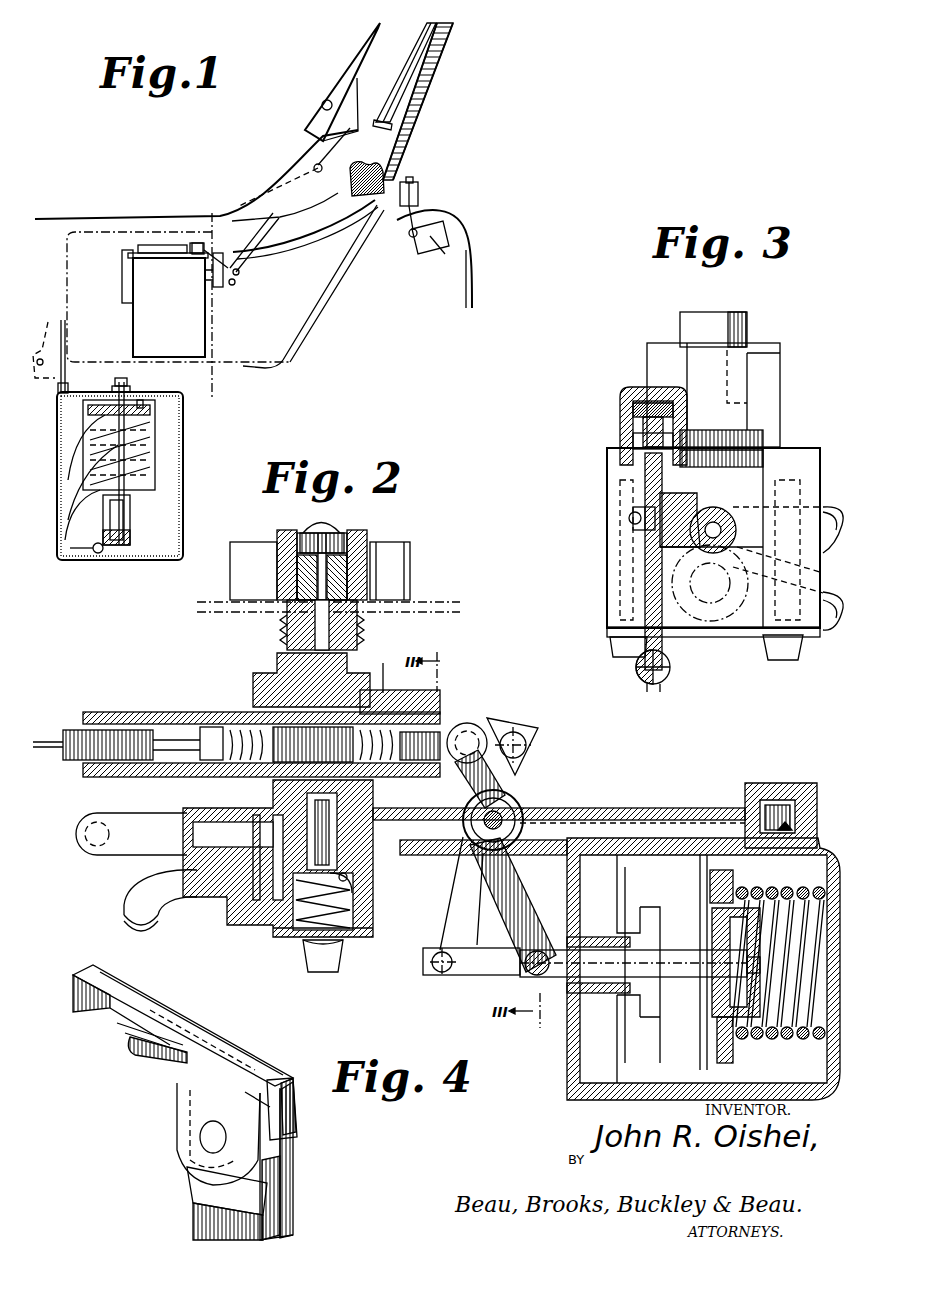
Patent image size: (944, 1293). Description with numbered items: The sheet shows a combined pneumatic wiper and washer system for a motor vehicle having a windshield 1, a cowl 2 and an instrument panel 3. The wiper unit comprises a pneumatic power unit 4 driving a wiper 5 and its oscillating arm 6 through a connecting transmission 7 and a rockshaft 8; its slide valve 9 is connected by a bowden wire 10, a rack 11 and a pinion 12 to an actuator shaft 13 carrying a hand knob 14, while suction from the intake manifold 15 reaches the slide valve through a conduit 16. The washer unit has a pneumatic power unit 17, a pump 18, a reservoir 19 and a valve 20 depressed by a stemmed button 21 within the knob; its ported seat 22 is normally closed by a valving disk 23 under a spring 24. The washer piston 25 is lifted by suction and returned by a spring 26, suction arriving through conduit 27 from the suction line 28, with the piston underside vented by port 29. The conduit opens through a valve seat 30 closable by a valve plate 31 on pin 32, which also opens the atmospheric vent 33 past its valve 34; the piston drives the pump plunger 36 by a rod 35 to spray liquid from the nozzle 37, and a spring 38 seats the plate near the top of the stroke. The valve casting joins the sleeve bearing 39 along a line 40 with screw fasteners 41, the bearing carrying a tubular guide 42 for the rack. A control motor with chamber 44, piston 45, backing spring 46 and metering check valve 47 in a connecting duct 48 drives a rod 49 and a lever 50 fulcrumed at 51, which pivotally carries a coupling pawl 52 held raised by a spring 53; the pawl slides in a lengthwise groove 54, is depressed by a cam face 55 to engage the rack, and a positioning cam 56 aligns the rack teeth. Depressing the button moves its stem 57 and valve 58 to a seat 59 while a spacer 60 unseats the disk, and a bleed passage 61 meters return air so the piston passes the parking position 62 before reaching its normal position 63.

In FIG. 1, the windshield 1 is at (395, 146).
In FIG. 1, the cowl 2 is at (332, 212).
In FIG. 1, the instrument panel 3 is at (440, 207).
In FIG. 1, the power unit 4 is at (172, 307).
In FIG. 1, the wiper 5 is at (395, 82).
In FIG. 1, the oscillating arm 6 is at (340, 75).
In FIG. 1, the connecting transmission 7 is at (240, 273).
In FIG. 1, the rockshaft 8 is at (341, 106).
In FIG. 1, the slide valve 9 is at (195, 243).
In FIG. 1, the bowden wire 10 is at (307, 247).
In FIG. 2, the bowden wire 10 is at (63, 740).
In FIG. 2, the rack 11 is at (273, 730).
In FIG. 3, the pinion 12 is at (757, 437).
In FIG. 2, the pinion 12 is at (253, 712).
In FIG. 3, the actuator shaft 13 is at (680, 318).
In FIG. 2, the actuator shaft 13 is at (367, 630).
In FIG. 1, the hand knob 14 is at (420, 185).
In FIG. 2, the hand knob 14 is at (387, 547).
In FIG. 1, the intake manifold 15 is at (42, 350).
In FIG. 1, the conduit 16 is at (122, 343).
In FIG. 1, the power unit 17 is at (157, 438).
In FIG. 1, the pump 18 is at (143, 533).
In FIG. 1, the reservoir 19 is at (183, 518).
In FIG. 2, the valve 20 is at (373, 890).
In FIG. 2, the stemmed button 21 is at (313, 523).
In FIG. 2, the ported seat 22 is at (340, 867).
In FIG. 2, the valving disk 23 is at (360, 913).
In FIG. 2, the spring 24 is at (297, 895).
In FIG. 1, the piston 25 is at (147, 480).
In FIG. 1, the spring 26 is at (150, 433).
In FIG. 1, the conduit 27 is at (253, 373).
In FIG. 3, the conduit 27 is at (827, 510).
In FIG. 2, the conduit 27 is at (130, 817).
In FIG. 1, the suction line 28 is at (243, 362).
In FIG. 3, the suction line 28 is at (825, 592).
In FIG. 2, the suction line 28 is at (157, 882).
In FIG. 1, the port 29 is at (113, 507).
In FIG. 1, the valve seat 30 is at (120, 377).
In FIG. 1, the valve plate 31 is at (120, 437).
In FIG. 1, the pin 32 is at (140, 400).
In FIG. 1, the atmospheric vent 33 is at (107, 413).
In FIG. 1, the valve 34 is at (110, 400).
In FIG. 1, the rod 35 is at (133, 520).
In FIG. 1, the pump plunger 36 is at (93, 527).
In FIG. 1, the nozzle 37 is at (313, 168).
In FIG. 1, the spring 38 is at (143, 447).
In FIG. 3, the sleeve bearing 39 is at (750, 377).
In FIG. 2, the sleeve bearing 39 is at (280, 657).
In FIG. 2, the line 40 is at (217, 780).
In FIG. 3, the screw fasteners 41 is at (785, 657).
In FIG. 2, the screw fasteners 41 is at (322, 960).
In FIG. 1, the tubular guide 42 is at (393, 181).
In FIG. 3, the tubular guide 42 is at (637, 433).
In FIG. 2, the tubular guide 42 is at (173, 713).
In FIG. 1, the chamber 44 is at (433, 254).
In FIG. 2, the chamber 44 is at (803, 1073).
In FIG. 2, the piston 45 is at (712, 1047).
In FIG. 2, the backing spring 46 is at (773, 893).
In FIG. 2, the metering check valve 47 is at (813, 840).
In FIG. 3, the connecting duct 48 is at (713, 522).
In FIG. 2, the connecting duct 48 is at (603, 827).
In FIG. 1, the rod 49 is at (413, 237).
In FIG. 3, the rod 49 is at (672, 673).
In FIG. 2, the rod 49 is at (687, 977).
In FIG. 1, the lever 50 is at (410, 227).
In FIG. 3, the lever 50 is at (647, 580).
In FIG. 2, the lever 50 is at (503, 923).
In FIG. 4, the lever 50 is at (190, 1213).
In FIG. 3, the fulcrum 51 is at (633, 518).
In FIG. 2, the fulcrum 51 is at (500, 818).
In FIG. 3, the coupling pawl 52 is at (640, 437).
In FIG. 2, the coupling pawl 52 is at (503, 705).
In FIG. 4, the coupling pawl 52 is at (123, 980).
In FIG. 2, the spring 53 is at (453, 777).
In FIG. 4, the spring 53 is at (127, 1025).
In FIG. 2, the lengthwise groove 54 is at (400, 690).
In FIG. 3, the cam face 55 is at (663, 407).
In FIG. 2, the cam face 55 is at (458, 723).
In FIG. 2, the positioning cam 56 is at (385, 765).
In FIG. 2, the stem 57 is at (287, 632).
In FIG. 2, the valve 58 is at (273, 780).
In FIG. 2, the seat 59 is at (250, 823).
In FIG. 2, the spacer 60 is at (327, 833).
In FIG. 2, the bleed passage 61 is at (773, 833).
In FIG. 2, the broken line 62 is at (660, 920).
In FIG. 2, the normal position 63 is at (643, 907).